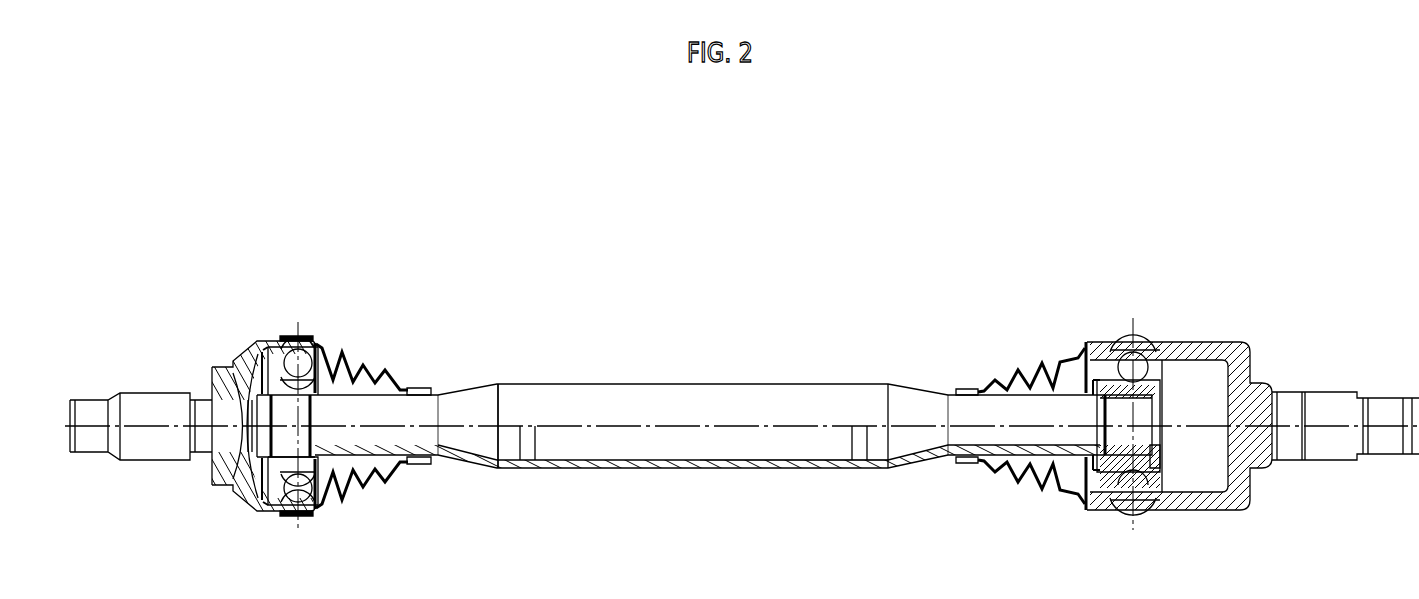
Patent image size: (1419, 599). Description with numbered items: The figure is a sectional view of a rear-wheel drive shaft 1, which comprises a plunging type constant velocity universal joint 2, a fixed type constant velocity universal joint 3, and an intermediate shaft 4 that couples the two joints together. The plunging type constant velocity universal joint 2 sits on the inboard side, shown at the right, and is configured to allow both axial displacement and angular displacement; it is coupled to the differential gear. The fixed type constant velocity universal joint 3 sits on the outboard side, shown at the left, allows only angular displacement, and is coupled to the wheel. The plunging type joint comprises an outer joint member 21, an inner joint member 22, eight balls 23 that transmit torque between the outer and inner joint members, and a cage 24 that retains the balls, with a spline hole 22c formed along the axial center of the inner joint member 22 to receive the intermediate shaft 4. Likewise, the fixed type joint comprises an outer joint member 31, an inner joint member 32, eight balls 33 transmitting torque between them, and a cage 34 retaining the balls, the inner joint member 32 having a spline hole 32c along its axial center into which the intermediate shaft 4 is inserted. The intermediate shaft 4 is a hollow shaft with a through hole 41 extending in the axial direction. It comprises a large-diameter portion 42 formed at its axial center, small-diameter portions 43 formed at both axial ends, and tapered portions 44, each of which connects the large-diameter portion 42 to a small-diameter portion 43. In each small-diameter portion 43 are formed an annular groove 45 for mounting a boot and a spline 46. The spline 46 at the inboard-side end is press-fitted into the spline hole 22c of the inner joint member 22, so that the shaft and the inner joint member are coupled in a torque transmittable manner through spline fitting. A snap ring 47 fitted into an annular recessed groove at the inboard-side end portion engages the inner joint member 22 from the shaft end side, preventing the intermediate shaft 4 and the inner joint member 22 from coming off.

The rear-wheel drive shaft 1 is at (853, 236).
The plunging type constant velocity universal joint 2 is at (1164, 327).
The fixed type constant velocity universal joint 3 is at (311, 315).
The intermediate shaft 4 is at (733, 377).
The outer joint member 21 is at (1200, 345).
The inner joint member 22 is at (1126, 507).
The spline hole 22c is at (1100, 412).
The balls 23 is at (1127, 342).
The cage 24 is at (1160, 507).
The outer joint member 31 is at (254, 338).
The inner joint member 32 is at (333, 498).
The spline hole 32c is at (315, 410).
The balls 33 is at (307, 358).
The cage 34 is at (262, 508).
The through hole 41 is at (698, 454).
The large-diameter portion 42 is at (775, 468).
The small-diameter portions 43 is at (397, 476).
The tapered portions 44 is at (470, 463).
The annular groove 45 is at (422, 388).
The spline 46 is at (283, 365).
The snap ring 47 is at (245, 392).